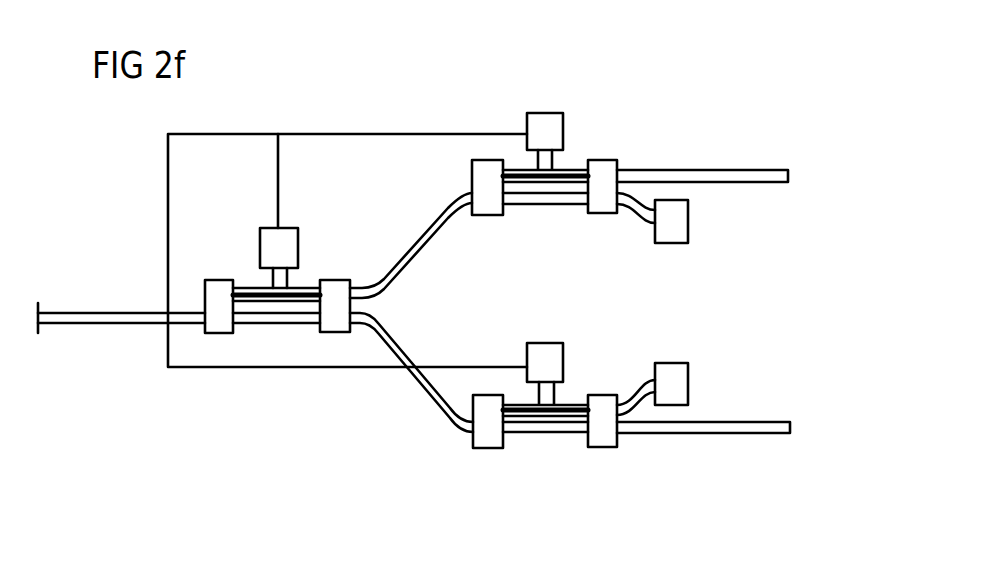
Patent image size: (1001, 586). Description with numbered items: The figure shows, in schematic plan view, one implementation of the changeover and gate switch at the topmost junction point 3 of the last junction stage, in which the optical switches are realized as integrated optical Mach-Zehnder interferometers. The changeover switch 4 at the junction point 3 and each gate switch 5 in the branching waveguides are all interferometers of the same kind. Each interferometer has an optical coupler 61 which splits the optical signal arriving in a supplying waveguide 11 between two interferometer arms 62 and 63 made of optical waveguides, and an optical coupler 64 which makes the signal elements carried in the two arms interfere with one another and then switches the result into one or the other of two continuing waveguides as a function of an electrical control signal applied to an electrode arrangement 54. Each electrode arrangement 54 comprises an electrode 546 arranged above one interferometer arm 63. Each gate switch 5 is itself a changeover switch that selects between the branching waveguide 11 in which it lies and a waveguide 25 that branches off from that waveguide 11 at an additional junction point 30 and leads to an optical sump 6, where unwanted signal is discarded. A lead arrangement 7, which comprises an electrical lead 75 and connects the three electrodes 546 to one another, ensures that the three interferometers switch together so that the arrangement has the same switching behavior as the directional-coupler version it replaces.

The junction point 3 is at (226, 263).
The changeover switch 4 is at (328, 260).
The gate switch 5 is at (545, 214).
The optical sump 6 is at (688, 218).
The lead arrangement 7 is at (351, 370).
The waveguide 11 is at (102, 327).
The waveguide 25 is at (640, 216).
The additional junction point 30 is at (587, 150).
The electrode arrangement 54 is at (249, 288).
The optical coupler 61 is at (222, 318).
The interferometer arm 62 is at (260, 327).
The interferometer arm 63 is at (295, 300).
The optical coupler 64 is at (335, 297).
The electrical lead 75 is at (338, 133).
The electrode 546 is at (303, 292).